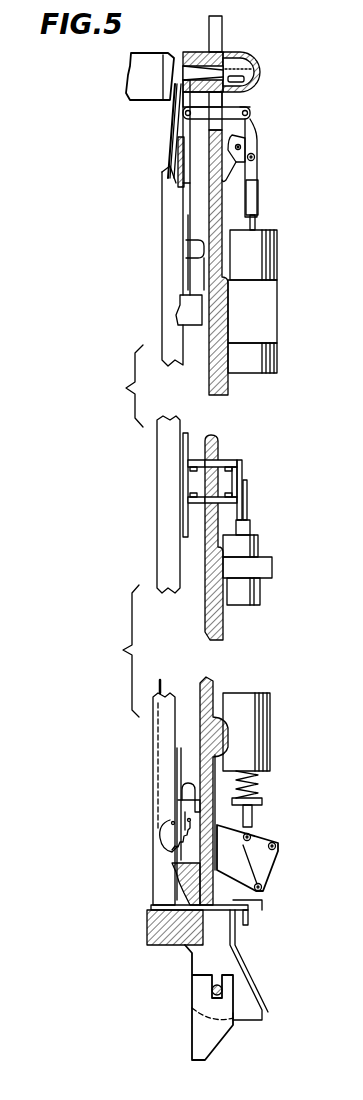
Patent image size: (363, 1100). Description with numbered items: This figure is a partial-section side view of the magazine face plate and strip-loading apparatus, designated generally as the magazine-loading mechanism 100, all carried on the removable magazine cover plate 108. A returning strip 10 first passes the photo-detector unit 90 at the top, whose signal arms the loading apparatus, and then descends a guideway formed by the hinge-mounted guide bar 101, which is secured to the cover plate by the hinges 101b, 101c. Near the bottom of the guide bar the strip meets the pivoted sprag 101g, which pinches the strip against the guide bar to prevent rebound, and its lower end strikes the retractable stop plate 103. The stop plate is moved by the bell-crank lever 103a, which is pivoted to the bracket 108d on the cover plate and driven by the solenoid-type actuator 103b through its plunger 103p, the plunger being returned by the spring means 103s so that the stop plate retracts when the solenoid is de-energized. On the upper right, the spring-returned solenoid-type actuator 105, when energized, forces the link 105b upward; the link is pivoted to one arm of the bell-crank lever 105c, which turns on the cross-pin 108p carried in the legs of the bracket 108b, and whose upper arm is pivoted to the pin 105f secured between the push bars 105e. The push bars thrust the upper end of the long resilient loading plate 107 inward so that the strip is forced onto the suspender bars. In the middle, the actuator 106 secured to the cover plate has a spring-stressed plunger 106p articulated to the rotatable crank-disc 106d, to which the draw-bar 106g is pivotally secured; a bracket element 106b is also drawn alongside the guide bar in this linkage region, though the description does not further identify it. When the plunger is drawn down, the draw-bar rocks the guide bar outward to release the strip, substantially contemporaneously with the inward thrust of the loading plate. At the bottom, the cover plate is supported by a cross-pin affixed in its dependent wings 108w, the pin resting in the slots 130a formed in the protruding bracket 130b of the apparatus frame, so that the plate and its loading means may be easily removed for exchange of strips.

The strip 10 is at (182, 134).
The photo-detector unit 90 is at (256, 64).
The magazine-loading mechanism 100 is at (151, 555).
The guide bar 101 is at (163, 522).
The hinge 101b is at (182, 260).
The hinge 101c is at (183, 788).
The sprag 101g is at (162, 822).
The stop plate 103 is at (172, 900).
The bell-crank lever 103a is at (268, 868).
The solenoid-type actuator 103b is at (247, 724).
The plunger 103p is at (252, 817).
The spring means 103s is at (258, 780).
The spring-returned solenoid-type actuator 105 is at (250, 260).
The link 105b is at (258, 204).
The bell-crank lever 105c is at (258, 156).
The push bars 105e is at (234, 107).
The pin 105f is at (250, 112).
The solenoid-type actuator 106 is at (242, 592).
The bracket 106b is at (183, 507).
The crank-disc 106d is at (241, 480).
The draw-bar 106g is at (213, 465).
The plunger 106p is at (246, 506).
The loading plate 107 is at (173, 162).
The magazine cover plate 108 is at (208, 686).
The bracket 108b is at (240, 168).
The bracket 108d is at (262, 846).
The cross-pin 108p is at (240, 146).
The dependent wings 108w is at (232, 952).
The slots 130a is at (212, 980).
The protruding bracket 130b is at (202, 1038).